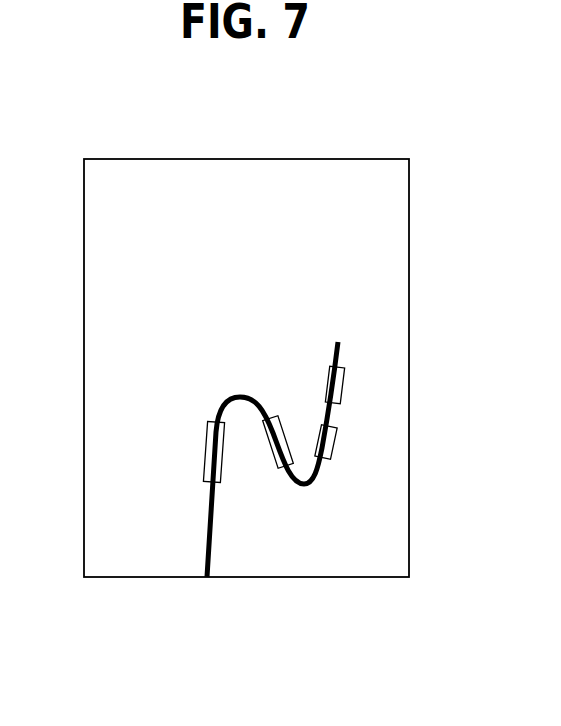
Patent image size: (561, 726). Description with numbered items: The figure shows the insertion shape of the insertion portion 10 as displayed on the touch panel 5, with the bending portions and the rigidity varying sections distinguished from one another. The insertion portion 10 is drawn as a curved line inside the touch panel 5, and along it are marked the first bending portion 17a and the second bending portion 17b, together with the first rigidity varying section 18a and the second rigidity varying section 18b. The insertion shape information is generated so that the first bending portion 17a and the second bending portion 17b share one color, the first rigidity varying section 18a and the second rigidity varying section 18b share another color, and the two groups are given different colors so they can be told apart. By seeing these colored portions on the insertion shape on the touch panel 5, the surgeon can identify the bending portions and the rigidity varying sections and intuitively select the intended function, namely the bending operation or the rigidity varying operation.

The touch panel 5 is at (246, 159).
The insertion portion 10 is at (192, 537).
The first bending portion 17a is at (347, 382).
The second bending portion 17b is at (338, 447).
The first rigidity varying section 18a is at (288, 418).
The second rigidity varying section 18b is at (202, 445).